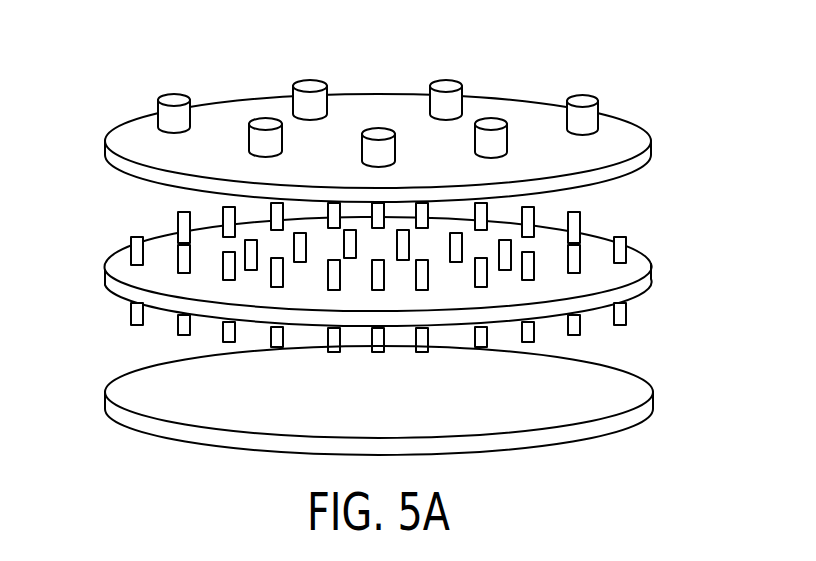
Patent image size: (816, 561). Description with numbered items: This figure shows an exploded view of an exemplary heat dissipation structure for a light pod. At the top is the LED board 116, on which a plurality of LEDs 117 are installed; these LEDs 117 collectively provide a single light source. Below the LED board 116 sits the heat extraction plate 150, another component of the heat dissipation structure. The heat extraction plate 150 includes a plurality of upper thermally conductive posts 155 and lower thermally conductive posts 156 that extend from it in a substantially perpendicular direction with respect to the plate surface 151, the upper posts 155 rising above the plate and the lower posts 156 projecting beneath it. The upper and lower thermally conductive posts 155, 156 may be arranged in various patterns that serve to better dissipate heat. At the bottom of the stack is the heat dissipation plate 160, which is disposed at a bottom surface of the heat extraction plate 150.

The LED board 116 is at (653, 152).
The LEDs 117 is at (582, 96).
The heat extraction plate 150 is at (397, 287).
The plate surface 151 is at (638, 262).
The upper thermally conductive posts 155 is at (130, 252).
The lower thermally conductive posts 156 is at (627, 307).
The heat dissipation plate 160 is at (105, 401).